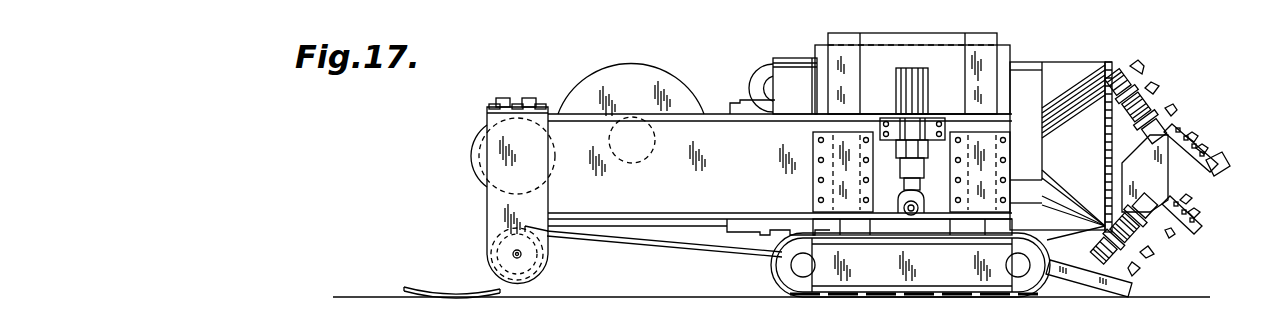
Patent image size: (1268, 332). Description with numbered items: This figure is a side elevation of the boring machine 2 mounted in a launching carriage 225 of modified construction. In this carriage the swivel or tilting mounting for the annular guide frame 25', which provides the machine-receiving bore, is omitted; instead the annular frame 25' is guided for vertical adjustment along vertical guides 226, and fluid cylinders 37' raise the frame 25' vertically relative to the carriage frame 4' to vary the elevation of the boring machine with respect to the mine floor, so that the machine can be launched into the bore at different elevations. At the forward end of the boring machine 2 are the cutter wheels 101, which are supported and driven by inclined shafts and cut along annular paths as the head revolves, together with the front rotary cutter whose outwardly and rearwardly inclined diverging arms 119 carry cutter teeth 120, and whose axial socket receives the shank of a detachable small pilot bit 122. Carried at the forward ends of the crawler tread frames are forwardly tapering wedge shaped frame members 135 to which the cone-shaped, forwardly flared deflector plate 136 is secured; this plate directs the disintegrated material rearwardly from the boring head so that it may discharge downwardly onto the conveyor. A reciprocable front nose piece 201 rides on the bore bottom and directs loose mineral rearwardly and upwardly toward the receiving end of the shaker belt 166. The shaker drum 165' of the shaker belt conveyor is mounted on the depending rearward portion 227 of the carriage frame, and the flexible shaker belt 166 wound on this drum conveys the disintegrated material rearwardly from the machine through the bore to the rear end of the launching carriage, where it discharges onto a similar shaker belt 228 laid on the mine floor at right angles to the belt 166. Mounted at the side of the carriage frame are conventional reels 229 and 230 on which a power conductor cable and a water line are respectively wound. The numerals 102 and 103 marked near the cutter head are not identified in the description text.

The carriage frame 4' is at (780, 143).
The depending rearward portion 227 is at (497, 214).
The shaker drum 165' is at (551, 260).
The reel 229 is at (648, 76).
The annular guide frame 25' is at (931, 65).
The vertical guides 226 is at (975, 60).
The fluid cylinders 37' is at (923, 141).
The reel 230 is at (910, 282).
The shaker belt 166 is at (674, 238).
The launching carriage 225 is at (725, 213).
The shaker belt 228 is at (438, 291).
The boring machine 2 is at (1066, 62).
The wedge shaped frame members 135 is at (1072, 77).
The deflector plate 136 is at (1110, 66).
The cutter wheels 101 is at (1148, 112).
The tooth holder 102 is at (1140, 70).
The tooth 103 is at (1152, 90).
The diverging arms 119 is at (1176, 128).
The cutter teeth 120 is at (1192, 140).
The pilot bit 122 is at (1224, 172).
The front nose piece 201 is at (1121, 289).